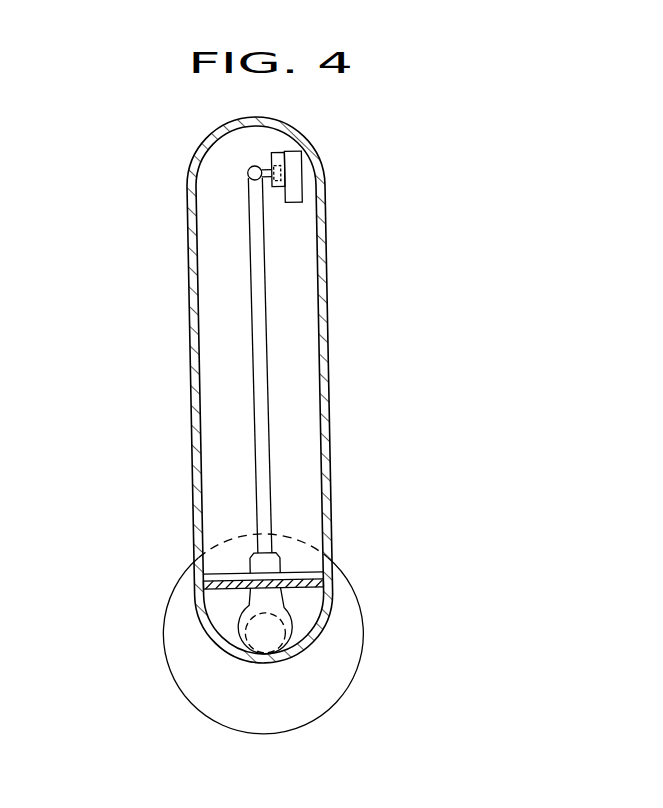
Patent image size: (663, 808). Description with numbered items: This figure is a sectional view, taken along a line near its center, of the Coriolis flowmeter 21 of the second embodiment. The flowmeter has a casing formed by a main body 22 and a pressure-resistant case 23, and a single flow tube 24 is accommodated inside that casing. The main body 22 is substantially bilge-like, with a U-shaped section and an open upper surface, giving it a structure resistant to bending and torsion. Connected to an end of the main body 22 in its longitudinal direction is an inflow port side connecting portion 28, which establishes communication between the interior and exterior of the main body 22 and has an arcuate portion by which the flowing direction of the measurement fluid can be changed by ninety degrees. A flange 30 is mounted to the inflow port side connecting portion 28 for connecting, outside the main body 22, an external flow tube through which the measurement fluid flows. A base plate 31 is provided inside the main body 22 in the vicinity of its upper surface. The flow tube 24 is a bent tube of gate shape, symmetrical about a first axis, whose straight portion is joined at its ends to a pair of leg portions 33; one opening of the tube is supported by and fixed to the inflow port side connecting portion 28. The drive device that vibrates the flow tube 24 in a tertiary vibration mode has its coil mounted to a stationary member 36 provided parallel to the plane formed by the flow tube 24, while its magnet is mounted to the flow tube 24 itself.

The Coriolis flowmeter 21 is at (348, 207).
The main body 22 is at (308, 645).
The pressure-resistant case 23 is at (328, 359).
The flow tube 24 is at (250, 392).
The inflow port side connecting portion 28 is at (257, 602).
The flange 30 is at (350, 625).
The base plate 31 is at (293, 574).
The leg portion 33 is at (266, 296).
The stationary member 36 is at (299, 188).